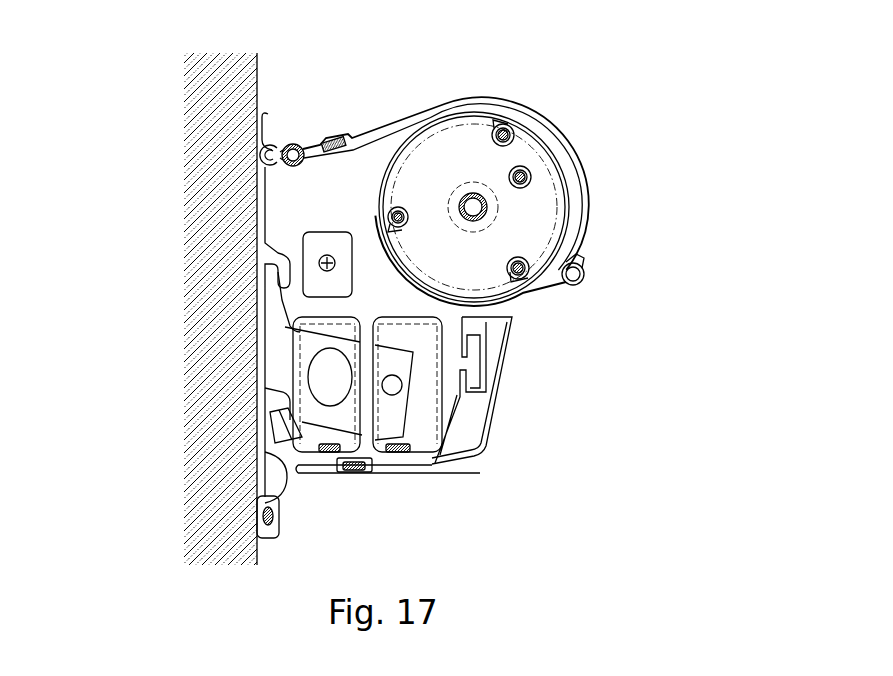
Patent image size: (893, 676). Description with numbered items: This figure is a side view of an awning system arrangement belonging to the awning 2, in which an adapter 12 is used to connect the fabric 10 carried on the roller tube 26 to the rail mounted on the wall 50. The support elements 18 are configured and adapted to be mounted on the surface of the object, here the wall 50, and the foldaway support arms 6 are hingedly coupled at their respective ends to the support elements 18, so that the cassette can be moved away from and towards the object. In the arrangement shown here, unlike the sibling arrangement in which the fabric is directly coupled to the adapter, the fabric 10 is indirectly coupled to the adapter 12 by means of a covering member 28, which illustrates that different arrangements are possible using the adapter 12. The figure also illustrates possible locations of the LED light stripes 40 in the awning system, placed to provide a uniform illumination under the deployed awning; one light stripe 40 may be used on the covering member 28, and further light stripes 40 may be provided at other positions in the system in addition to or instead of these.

The awning 2 is at (633, 437).
The foldaway support arms 6 is at (423, 408).
The fabric 10 is at (548, 287).
The adapter 12 is at (292, 118).
The support elements 18 is at (263, 214).
The roller tube 26 is at (547, 192).
The covering member 28 is at (533, 109).
The LED light stripes 40 is at (332, 138).
The wall 50 is at (222, 352).